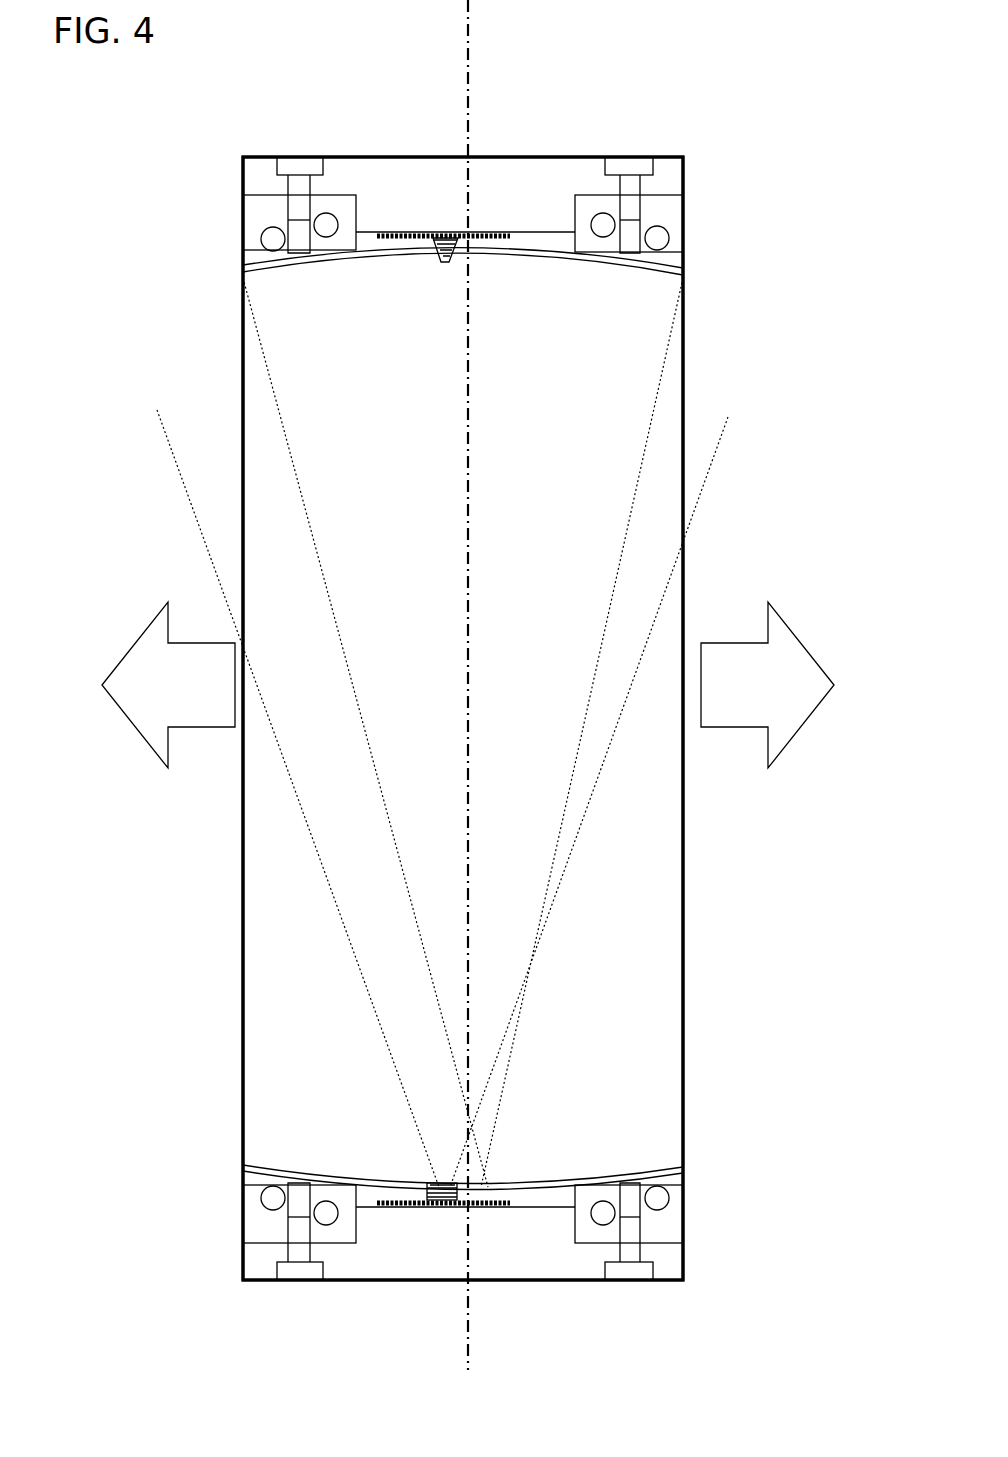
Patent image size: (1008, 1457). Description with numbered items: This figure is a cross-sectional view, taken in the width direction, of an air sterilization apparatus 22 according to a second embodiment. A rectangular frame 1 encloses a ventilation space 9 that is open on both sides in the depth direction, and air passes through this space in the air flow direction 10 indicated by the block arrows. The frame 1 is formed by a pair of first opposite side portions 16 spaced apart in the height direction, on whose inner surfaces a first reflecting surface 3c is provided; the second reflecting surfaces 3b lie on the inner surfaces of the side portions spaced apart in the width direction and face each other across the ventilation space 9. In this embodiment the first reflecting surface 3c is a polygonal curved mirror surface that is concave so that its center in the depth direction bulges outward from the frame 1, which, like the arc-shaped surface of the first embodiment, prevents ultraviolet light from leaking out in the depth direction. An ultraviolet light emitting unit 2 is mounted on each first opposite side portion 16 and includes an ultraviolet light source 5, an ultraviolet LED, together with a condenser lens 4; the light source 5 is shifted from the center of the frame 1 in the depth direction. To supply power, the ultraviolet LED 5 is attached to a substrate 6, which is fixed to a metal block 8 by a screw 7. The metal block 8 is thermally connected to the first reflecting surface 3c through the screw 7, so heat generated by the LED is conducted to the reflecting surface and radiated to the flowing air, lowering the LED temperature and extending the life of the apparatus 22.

The frame 1 is at (437, 172).
The ultraviolet light emitting unit 2 is at (432, 265).
The second reflecting surface 3b is at (637, 582).
The first reflecting surface 3c is at (330, 267).
The condenser lens 4 is at (442, 260).
The ultraviolet light source 5 is at (436, 246).
The substrate 6 is at (479, 232).
The screw 7 is at (483, 240).
The metal block 8 is at (590, 180).
The ventilation space 9 is at (628, 940).
The air flow direction 10 is at (148, 695).
The first opposite side portion 16 is at (485, 175).
The air sterilization apparatus 22 is at (226, 187).